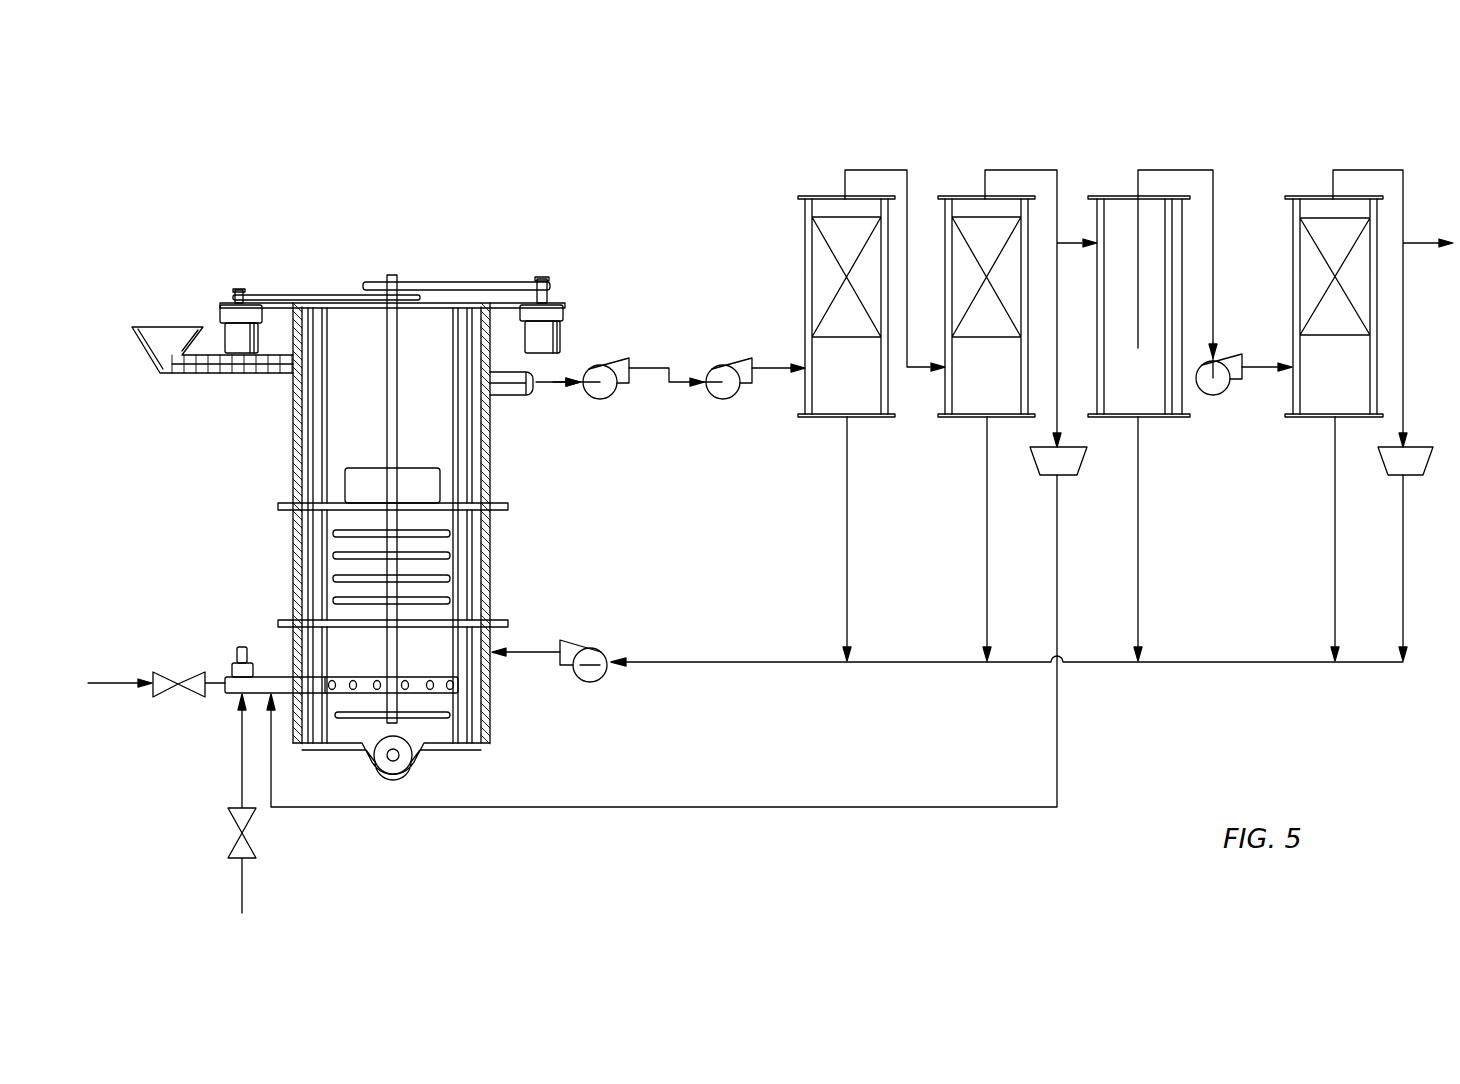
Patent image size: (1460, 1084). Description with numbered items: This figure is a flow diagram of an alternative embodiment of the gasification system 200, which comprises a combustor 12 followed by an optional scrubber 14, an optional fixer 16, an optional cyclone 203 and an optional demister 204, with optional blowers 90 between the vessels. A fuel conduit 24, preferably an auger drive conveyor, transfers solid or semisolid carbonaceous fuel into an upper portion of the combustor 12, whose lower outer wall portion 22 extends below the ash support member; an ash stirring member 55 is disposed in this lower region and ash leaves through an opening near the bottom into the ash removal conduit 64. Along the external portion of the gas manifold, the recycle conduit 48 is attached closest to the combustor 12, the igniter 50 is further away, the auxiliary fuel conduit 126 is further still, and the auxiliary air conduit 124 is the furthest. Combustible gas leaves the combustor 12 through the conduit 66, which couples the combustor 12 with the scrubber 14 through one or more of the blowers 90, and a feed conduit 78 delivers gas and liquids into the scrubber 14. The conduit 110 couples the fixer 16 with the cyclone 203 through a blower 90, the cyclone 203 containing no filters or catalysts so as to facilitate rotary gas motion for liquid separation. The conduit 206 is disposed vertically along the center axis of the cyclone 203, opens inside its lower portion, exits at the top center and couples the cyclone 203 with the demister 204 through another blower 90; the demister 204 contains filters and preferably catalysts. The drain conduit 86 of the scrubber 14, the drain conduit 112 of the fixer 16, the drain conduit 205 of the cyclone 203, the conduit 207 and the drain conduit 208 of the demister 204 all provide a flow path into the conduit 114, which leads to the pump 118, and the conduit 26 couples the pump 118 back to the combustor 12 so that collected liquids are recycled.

The combustor 12 is at (314, 262).
The scrubber 14 is at (826, 199).
The fixer 16 is at (967, 199).
The lower outer wall portion 22 is at (490, 697).
The fuel conduit 24 is at (230, 378).
The conduit 26 is at (532, 648).
The recycle conduit 48 is at (630, 807).
The igniter 50 is at (242, 647).
The ash stirring member 55 is at (445, 713).
The ash removal conduit 64 is at (412, 765).
The conduit 66 is at (510, 396).
The feed conduit 78 is at (773, 370).
The drain conduit 86 is at (847, 505).
The blowers 90 is at (727, 397).
The conduit 110 is at (1063, 243).
The drain conduit 112 is at (987, 492).
The conduit 114 is at (722, 663).
The pump 118 is at (590, 650).
The auxiliary air conduit 124 is at (216, 680).
The auxiliary fuel conduit 126 is at (237, 727).
The gasification system 200 is at (684, 165).
The cyclone 203 is at (1113, 197).
The demister 204 is at (1308, 197).
The drain conduit 205 is at (1138, 493).
The conduit 206 is at (1200, 168).
The conduit 207 is at (1418, 240).
The drain conduit 208 is at (1335, 518).